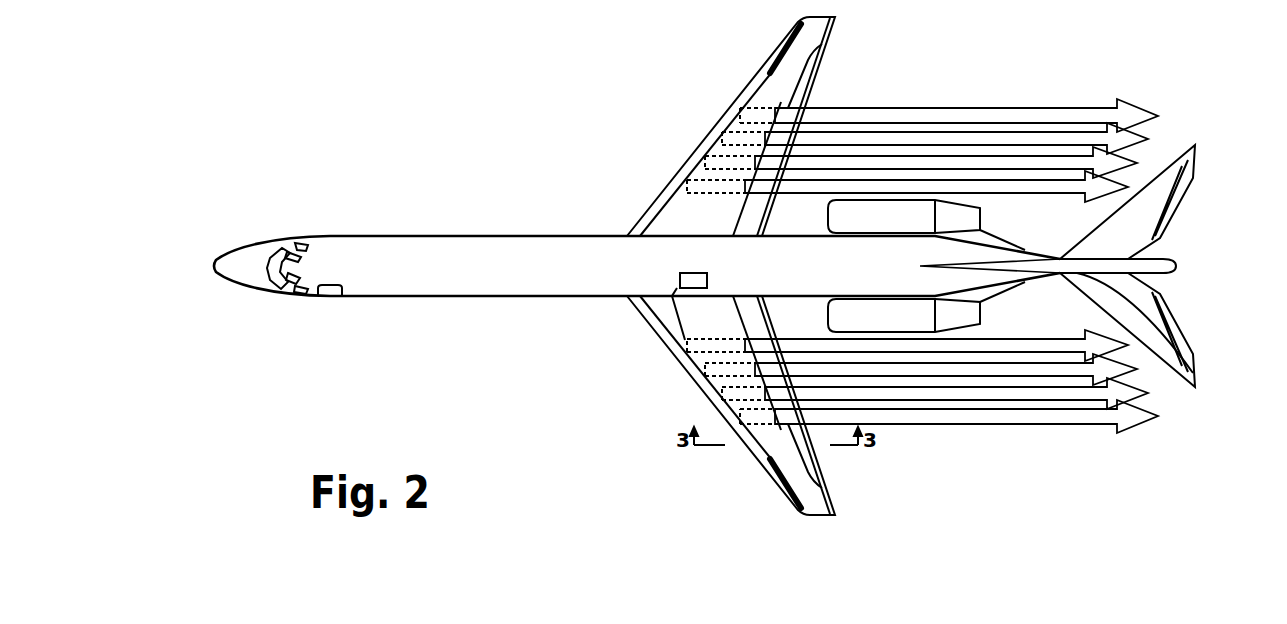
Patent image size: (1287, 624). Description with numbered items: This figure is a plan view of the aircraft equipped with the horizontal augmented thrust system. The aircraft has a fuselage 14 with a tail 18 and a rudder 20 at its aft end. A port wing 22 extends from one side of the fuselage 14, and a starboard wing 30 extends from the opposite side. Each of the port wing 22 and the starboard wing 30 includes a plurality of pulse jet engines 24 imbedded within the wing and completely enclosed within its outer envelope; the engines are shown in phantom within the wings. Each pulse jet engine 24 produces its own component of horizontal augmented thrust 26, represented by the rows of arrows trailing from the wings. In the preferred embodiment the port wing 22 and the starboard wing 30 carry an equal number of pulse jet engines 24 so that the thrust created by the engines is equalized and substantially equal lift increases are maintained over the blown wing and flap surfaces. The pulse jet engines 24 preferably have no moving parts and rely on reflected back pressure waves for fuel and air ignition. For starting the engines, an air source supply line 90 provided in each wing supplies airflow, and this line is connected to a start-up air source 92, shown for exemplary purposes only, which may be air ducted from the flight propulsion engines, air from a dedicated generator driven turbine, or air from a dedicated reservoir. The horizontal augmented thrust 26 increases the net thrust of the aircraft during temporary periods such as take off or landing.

The fuselage 14 is at (463, 275).
The tail 18 is at (1148, 300).
The rudder 20 is at (1173, 260).
The port wing 22 is at (783, 463).
The pulse jet engine 24 is at (678, 170).
The horizontal augmented thrust 26 is at (1050, 188).
The starboard wing 30 is at (775, 78).
The air source supply line 90 is at (677, 318).
The start-up air source 92 is at (680, 282).